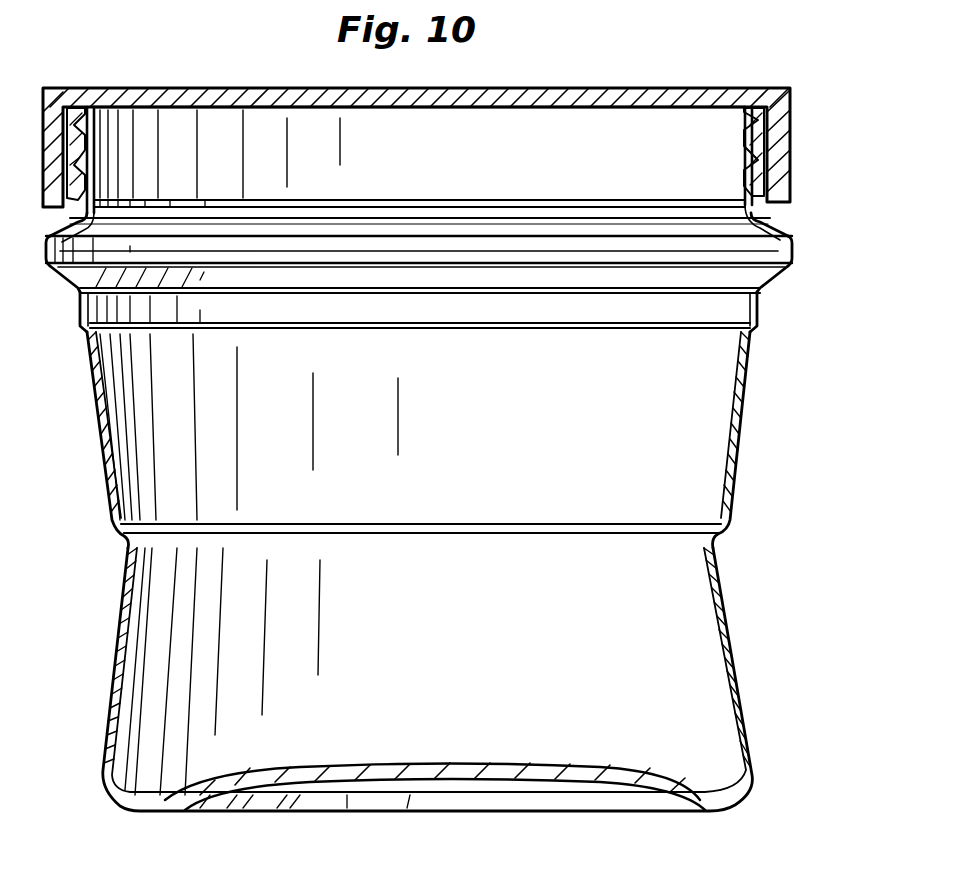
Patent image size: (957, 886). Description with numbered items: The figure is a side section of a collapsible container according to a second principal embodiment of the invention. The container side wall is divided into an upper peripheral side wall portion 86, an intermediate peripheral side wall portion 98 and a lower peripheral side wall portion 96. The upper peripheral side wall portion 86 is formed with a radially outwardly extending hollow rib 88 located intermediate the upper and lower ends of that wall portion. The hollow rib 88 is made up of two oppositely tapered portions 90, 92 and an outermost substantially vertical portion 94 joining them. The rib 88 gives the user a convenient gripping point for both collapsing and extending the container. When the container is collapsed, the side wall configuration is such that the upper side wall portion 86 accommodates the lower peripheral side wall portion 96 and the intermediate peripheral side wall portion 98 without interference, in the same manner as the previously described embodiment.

The upper peripheral side wall portion 86 is at (772, 306).
The hollow rib 88 is at (806, 245).
The tapered portion 90 is at (783, 283).
The tapered portion 92 is at (790, 218).
The outermost substantially vertical portion 94 is at (800, 234).
The lower peripheral side wall portion 96 is at (745, 678).
The intermediate peripheral side wall portion 98 is at (740, 457).